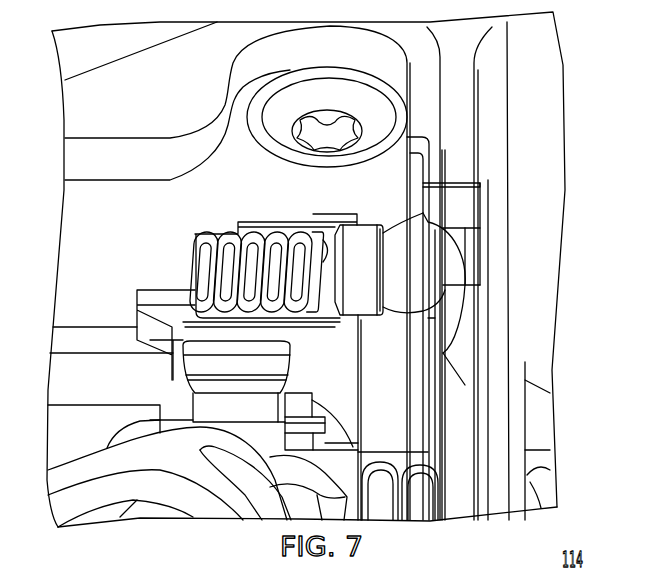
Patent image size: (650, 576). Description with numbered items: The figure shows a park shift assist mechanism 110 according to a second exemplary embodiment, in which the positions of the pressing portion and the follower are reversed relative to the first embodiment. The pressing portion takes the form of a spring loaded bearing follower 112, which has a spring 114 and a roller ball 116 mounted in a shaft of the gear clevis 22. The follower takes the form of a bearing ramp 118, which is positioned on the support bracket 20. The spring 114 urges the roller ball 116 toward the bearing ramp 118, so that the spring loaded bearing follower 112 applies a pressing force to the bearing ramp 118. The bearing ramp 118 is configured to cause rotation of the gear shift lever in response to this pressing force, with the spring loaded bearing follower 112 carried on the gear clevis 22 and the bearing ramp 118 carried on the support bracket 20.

The support bracket 20 is at (543, 75).
The gear clevis 22 is at (232, 205).
The park shift assist mechanism 110 is at (416, 208).
The spring loaded bearing follower 112 is at (367, 310).
The spring 114 is at (277, 303).
The roller ball 116 is at (407, 318).
The bearing ramp 118 is at (463, 309).